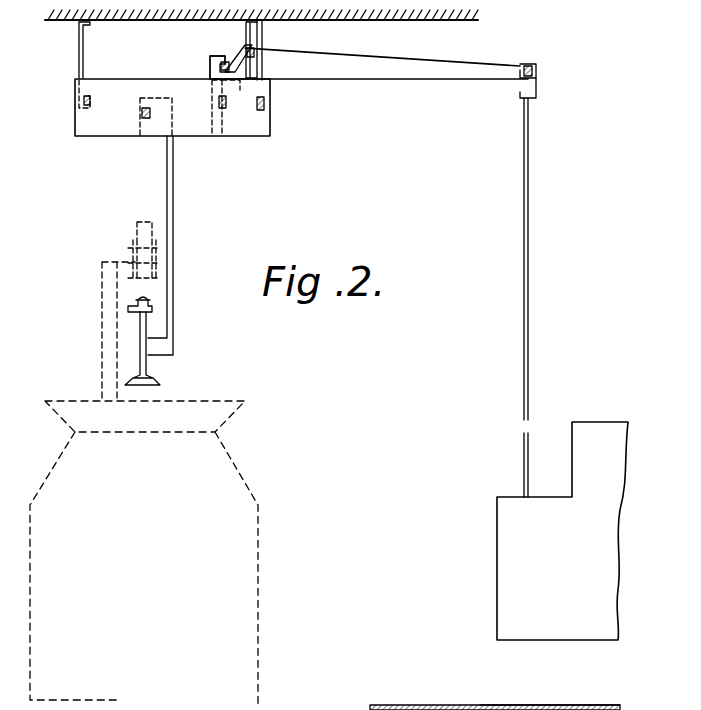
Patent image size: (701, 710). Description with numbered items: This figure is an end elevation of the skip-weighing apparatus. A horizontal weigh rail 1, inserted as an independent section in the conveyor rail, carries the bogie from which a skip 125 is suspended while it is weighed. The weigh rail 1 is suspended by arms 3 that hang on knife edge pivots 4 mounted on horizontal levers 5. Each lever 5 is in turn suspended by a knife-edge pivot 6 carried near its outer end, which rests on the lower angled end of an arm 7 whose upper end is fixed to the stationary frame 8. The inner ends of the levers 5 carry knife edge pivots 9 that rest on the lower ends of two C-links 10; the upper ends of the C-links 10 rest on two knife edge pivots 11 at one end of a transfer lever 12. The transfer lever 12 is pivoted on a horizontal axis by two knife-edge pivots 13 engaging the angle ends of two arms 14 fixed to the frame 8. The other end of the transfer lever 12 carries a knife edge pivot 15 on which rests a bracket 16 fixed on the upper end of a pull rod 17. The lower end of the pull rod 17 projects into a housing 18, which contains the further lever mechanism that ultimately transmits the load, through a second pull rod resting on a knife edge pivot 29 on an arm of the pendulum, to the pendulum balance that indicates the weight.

The weigh rail 1 is at (150, 366).
The arms 3 is at (175, 250).
The knife edge pivots 4 is at (143, 120).
The horizontal levers 5 is at (203, 125).
The knife-edge pivots 6 is at (113, 103).
The arms 7 is at (79, 45).
The stationary frame 8 is at (143, 22).
The knife edge pivots 9 is at (228, 108).
The C-links 10 is at (212, 68).
The knife edge pivots 11 is at (222, 60).
The transfer lever 12 is at (413, 68).
The knife-edge pivots 13 is at (255, 53).
The arms 14 is at (248, 35).
The knife edge pivot 15 is at (538, 72).
The bracket 16 is at (538, 88).
The pull rod 17 is at (530, 172).
The housing 18 is at (506, 548).
The knife edge pivot 29 is at (492, 705).
The skip 125 is at (258, 560).